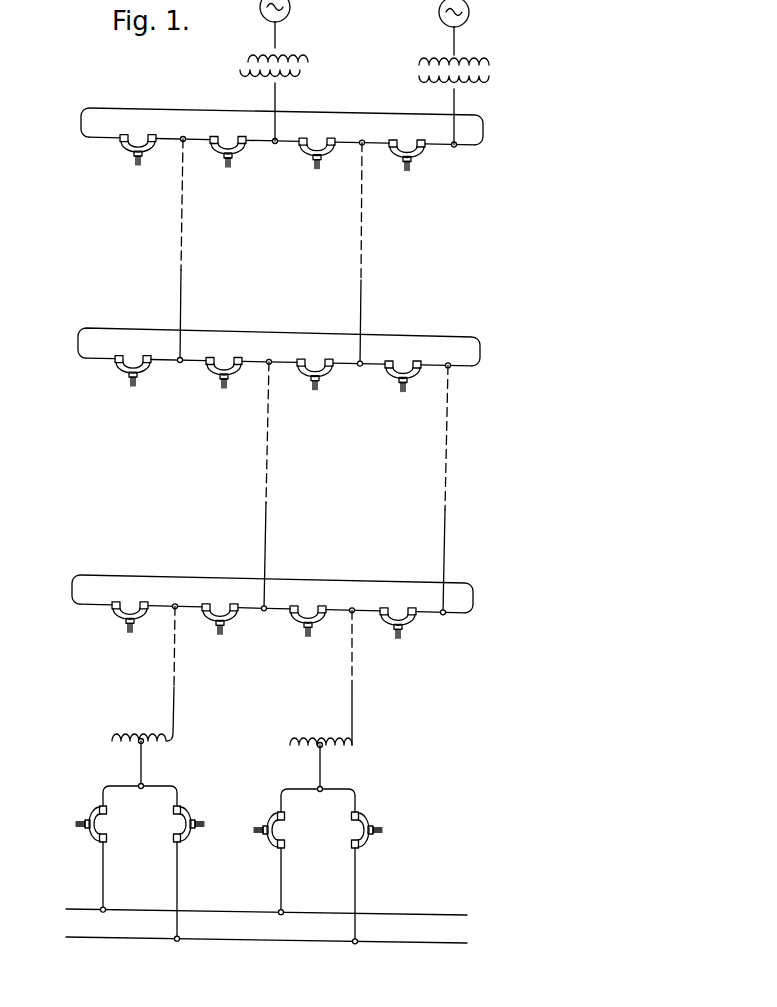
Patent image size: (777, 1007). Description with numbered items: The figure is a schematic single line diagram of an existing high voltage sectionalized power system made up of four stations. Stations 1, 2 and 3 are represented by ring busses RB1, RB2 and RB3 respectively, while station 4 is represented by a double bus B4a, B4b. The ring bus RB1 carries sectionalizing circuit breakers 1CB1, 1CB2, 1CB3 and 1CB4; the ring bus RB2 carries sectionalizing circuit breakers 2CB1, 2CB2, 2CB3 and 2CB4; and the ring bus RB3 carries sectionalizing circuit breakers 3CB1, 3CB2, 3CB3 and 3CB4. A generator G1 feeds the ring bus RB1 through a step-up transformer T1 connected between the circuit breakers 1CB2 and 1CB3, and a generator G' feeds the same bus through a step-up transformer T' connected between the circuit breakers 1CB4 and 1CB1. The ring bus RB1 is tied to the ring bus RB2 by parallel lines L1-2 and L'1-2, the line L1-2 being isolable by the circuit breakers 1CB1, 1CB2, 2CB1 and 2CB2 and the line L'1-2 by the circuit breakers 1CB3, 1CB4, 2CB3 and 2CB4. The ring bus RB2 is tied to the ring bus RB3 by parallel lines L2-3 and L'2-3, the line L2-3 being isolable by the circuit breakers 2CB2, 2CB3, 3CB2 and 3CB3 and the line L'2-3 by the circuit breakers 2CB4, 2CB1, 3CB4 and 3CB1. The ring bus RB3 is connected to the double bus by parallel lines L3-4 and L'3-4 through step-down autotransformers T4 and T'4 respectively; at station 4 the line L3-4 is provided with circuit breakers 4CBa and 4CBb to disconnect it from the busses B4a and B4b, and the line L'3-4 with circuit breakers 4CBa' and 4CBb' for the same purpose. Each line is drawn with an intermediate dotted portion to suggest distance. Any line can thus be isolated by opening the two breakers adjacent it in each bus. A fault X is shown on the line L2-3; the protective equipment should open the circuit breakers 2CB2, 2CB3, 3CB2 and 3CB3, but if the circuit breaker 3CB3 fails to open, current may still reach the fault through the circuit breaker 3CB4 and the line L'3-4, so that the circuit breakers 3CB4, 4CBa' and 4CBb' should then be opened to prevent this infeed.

The station 1 is at (279, 94).
The station 2 is at (258, 363).
The station 3 is at (253, 606).
The station 4 is at (245, 847).
The ring bus RB1 is at (143, 108).
The ring bus RB2 is at (232, 330).
The ring bus RB3 is at (189, 576).
The sectionalizing circuit breaker 1CB1 is at (128, 150).
The sectionalizing circuit breaker 1CB2 is at (242, 152).
The sectionalizing circuit breaker 1CB3 is at (327, 153).
The sectionalizing circuit breaker 1CB4 is at (413, 153).
The sectionalizing circuit breaker 2CB1 is at (123, 371).
The sectionalizing circuit breaker 2CB2 is at (215, 374).
The sectionalizing circuit breaker 2CB3 is at (326, 374).
The sectionalizing circuit breaker 2CB4 is at (413, 375).
The sectionalizing circuit breaker 3CB1 is at (118, 618).
The sectionalizing circuit breaker 3CB2 is at (230, 621).
The sectionalizing circuit breaker 3CB3 is at (300, 622).
The sectionalizing circuit breaker 3CB4 is at (413, 623).
The generator G1 is at (292, 8).
The generator G' is at (472, 27).
The step-up transformer T1 is at (309, 67).
The step-up transformer T' is at (468, 101).
The line L1-2 is at (184, 272).
The line L'1-2 is at (389, 253).
The line L2-3 is at (266, 528).
The line L'2-3 is at (474, 488).
The fault X is at (266, 472).
The line L3-4 is at (175, 706).
The line L'3-4 is at (382, 677).
The step-down autotransformer T4 is at (156, 743).
The step-down autotransformer T'4 is at (333, 763).
The circuit breaker 4CBa is at (68, 837).
The circuit breaker 4CBb is at (197, 836).
The circuit breaker 4CBa' is at (249, 821).
The circuit breaker 4CBb' is at (387, 825).
The bus B4a is at (228, 911).
The bus B4b is at (218, 941).